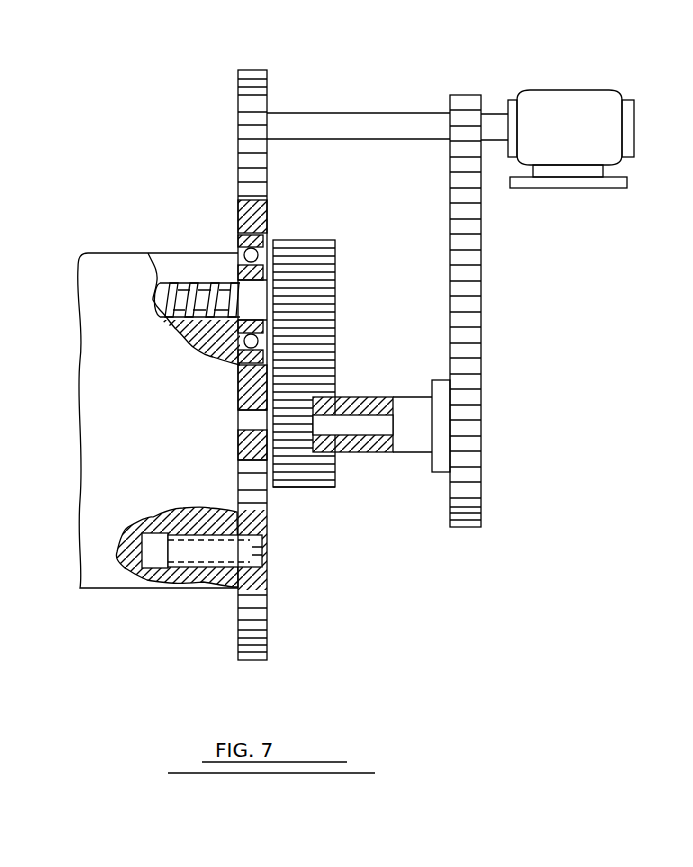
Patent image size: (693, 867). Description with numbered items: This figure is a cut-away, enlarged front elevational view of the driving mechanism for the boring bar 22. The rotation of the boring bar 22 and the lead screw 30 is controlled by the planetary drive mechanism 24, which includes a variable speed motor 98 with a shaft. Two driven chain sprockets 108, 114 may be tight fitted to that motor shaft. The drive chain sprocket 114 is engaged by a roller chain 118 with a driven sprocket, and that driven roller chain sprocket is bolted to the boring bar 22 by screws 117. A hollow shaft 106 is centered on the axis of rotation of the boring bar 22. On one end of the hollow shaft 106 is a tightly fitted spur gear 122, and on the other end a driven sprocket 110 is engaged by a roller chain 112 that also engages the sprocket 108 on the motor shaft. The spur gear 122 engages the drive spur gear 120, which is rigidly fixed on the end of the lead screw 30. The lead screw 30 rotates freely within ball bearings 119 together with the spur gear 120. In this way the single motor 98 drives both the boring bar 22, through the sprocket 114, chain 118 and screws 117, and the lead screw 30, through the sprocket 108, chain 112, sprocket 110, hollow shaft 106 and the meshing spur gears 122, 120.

The boring bar 22 is at (98, 252).
The planetary drive mechanism 24 is at (410, 600).
The lead screw 30 is at (160, 307).
The variable speed motor 98 is at (592, 88).
The hollow shaft 106 is at (357, 393).
The chain sprocket 108 is at (450, 148).
The driven sprocket 110 is at (480, 497).
The roller chain 112 is at (480, 272).
The drive chain sprocket 114 is at (267, 80).
The screws 117 is at (262, 567).
The roller chain 118 is at (267, 182).
The ball bearings 119 is at (238, 240).
The drive spur gear 120 is at (340, 262).
The spur gear 122 is at (337, 483).